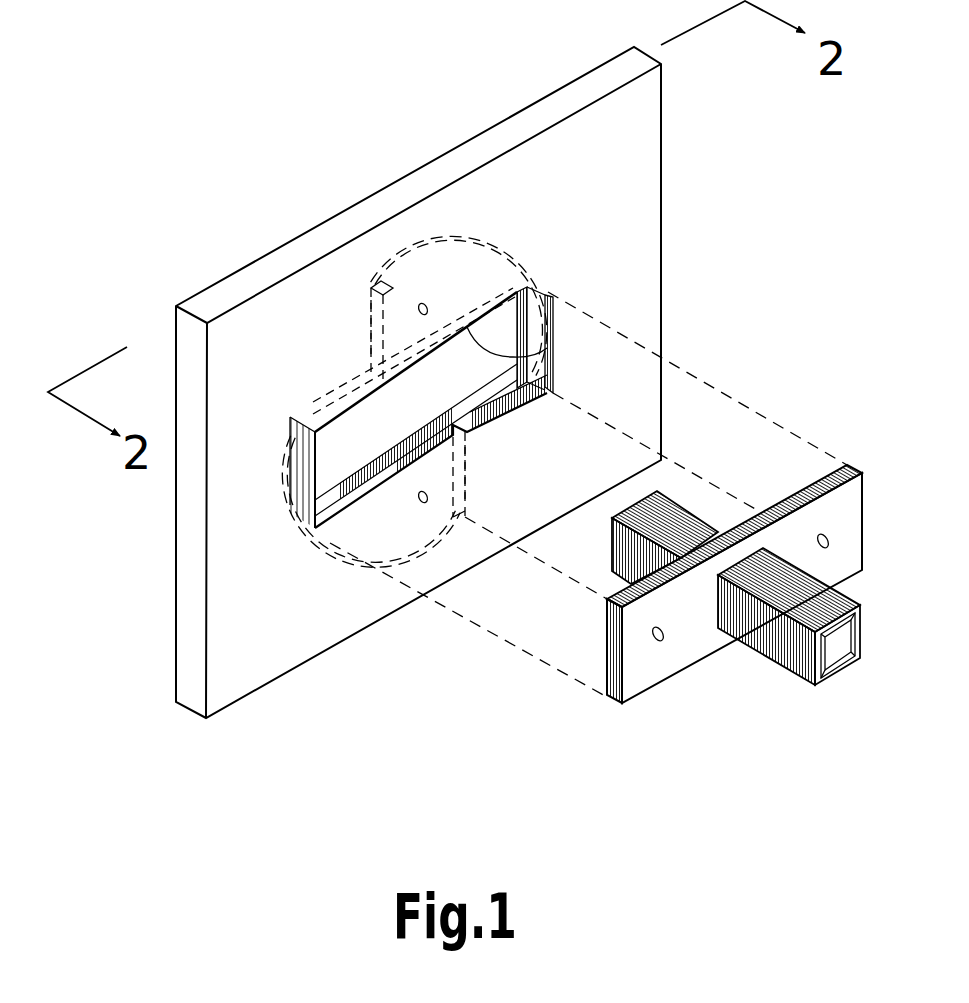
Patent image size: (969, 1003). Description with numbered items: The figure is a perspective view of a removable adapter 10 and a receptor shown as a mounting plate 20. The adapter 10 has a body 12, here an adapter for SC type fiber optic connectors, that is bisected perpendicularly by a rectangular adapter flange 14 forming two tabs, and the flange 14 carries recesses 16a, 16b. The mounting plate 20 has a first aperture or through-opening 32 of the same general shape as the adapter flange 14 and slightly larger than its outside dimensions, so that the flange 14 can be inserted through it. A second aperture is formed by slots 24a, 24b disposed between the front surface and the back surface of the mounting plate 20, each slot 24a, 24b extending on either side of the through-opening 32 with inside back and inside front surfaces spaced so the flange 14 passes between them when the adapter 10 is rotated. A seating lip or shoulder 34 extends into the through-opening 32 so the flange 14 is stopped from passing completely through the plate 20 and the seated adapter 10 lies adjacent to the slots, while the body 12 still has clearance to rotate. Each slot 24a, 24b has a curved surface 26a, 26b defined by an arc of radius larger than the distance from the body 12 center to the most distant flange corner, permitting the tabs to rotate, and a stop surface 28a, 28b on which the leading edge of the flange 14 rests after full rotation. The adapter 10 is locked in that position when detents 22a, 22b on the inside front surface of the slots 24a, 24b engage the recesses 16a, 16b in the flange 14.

The removable adapter 10 is at (547, 703).
The adapter body 12 is at (838, 592).
The adapter flange 14 is at (863, 482).
The recess 16a is at (818, 535).
The recess 16b is at (664, 641).
The mounting plate 20 is at (258, 649).
The detent 22a is at (445, 236).
The detent 22b is at (404, 502).
The slot 24a is at (566, 322).
The slot 24b is at (342, 482).
The curved surface 26a is at (452, 222).
The curved surface 26b is at (368, 570).
The stop surface 28a is at (366, 320).
The stop surface 28b is at (470, 468).
The through-opening 32 is at (372, 418).
The shoulder 34 is at (462, 421).